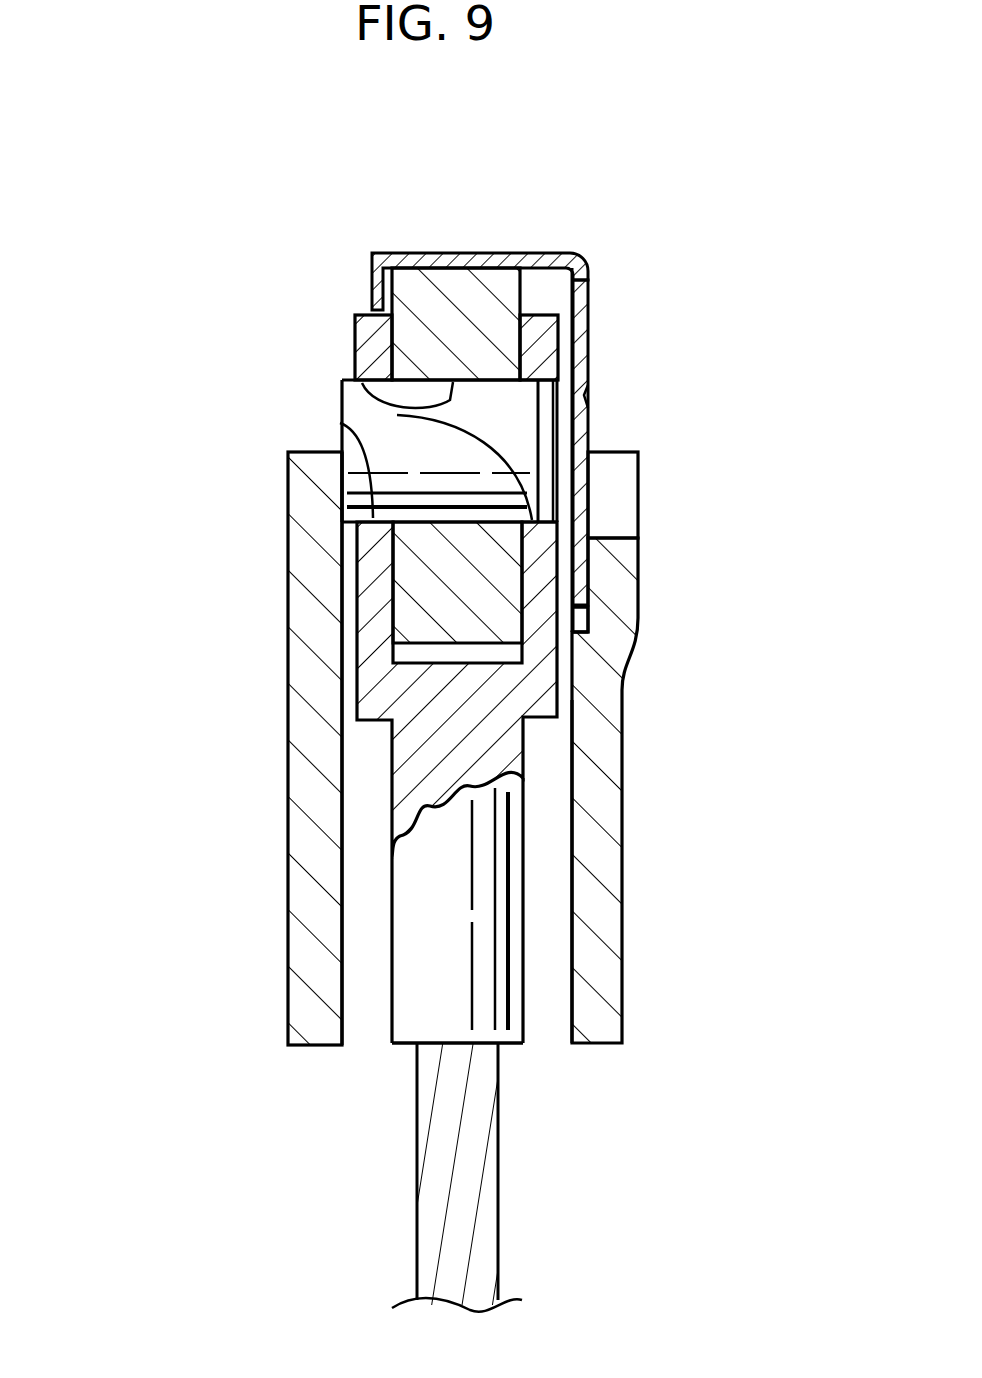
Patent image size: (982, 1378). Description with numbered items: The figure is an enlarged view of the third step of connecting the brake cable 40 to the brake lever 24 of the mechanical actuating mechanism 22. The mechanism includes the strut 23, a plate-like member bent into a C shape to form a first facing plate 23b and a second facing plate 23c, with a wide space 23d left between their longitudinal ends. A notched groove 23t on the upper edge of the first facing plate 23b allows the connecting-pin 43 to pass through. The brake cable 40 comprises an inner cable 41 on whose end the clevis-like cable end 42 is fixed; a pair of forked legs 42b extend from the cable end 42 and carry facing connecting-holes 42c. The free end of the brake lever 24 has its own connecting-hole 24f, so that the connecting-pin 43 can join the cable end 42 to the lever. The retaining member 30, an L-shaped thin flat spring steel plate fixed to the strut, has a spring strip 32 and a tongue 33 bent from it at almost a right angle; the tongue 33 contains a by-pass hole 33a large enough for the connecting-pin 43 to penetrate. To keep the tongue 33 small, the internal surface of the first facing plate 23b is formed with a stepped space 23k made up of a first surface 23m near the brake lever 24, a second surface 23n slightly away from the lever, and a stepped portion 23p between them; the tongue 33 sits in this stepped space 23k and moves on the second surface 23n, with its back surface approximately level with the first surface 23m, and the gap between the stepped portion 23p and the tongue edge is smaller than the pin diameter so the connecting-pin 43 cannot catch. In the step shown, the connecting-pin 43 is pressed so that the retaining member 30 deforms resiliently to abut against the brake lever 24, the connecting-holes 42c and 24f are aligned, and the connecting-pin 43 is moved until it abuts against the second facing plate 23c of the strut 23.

The mechanical actuating mechanism 22 is at (196, 258).
The strut 23 is at (288, 537).
The first facing plate 23b is at (622, 953).
The second facing plate 23c is at (290, 890).
The wide space 23d is at (367, 1013).
The stepped space 23k is at (582, 632).
The first surface 23m is at (572, 983).
The second surface 23n is at (580, 612).
The stepped portion 23p is at (587, 610).
The notched groove 23t is at (620, 497).
The brake lever 24 is at (412, 256).
The connecting-hole 24f is at (362, 383).
The retaining member 30 is at (560, 252).
The spring strip 32 is at (455, 250).
The tongue 33 is at (588, 312).
The by-pass hole 33a is at (590, 408).
The brake cable 40 is at (414, 1213).
The inner cable 41 is at (500, 1213).
The cable end 42 is at (523, 843).
The forked legs 42b is at (357, 640).
The connecting-holes 42c is at (397, 415).
The connecting-pin 43 is at (530, 440).